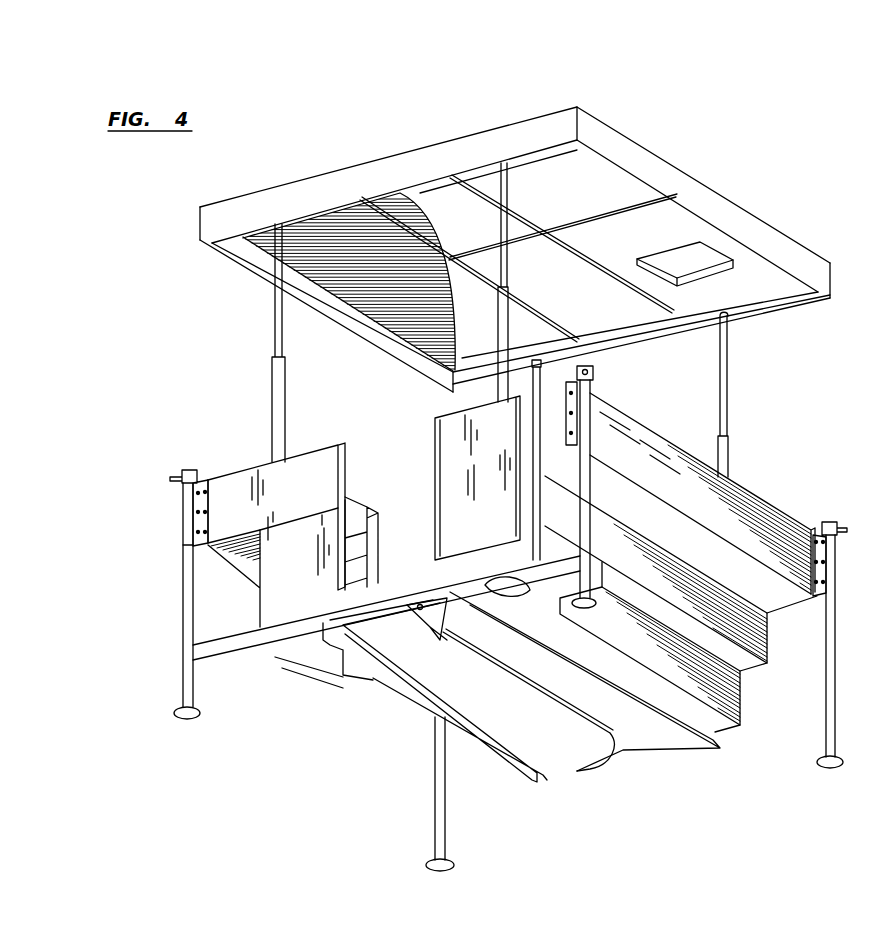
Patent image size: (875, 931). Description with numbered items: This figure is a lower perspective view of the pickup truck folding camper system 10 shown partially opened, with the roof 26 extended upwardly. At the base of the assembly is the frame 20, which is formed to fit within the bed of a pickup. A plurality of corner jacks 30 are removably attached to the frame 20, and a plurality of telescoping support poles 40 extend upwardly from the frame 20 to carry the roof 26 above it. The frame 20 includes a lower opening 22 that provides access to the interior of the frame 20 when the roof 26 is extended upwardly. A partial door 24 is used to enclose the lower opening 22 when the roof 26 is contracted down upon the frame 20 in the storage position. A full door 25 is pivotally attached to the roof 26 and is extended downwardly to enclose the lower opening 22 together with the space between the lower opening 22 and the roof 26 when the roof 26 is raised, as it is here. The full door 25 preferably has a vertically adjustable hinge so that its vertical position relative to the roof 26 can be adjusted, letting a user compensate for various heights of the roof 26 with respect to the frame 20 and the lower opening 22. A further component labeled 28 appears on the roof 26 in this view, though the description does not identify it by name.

The pickup truck folding camper system 10 is at (714, 62).
The frame 20 is at (748, 633).
The lower opening 22 is at (347, 480).
The partial door 24 is at (442, 433).
The full door 25 is at (403, 230).
The roof 26 is at (523, 123).
The hatch cover 28 is at (710, 258).
The corner jacks 30 is at (192, 688).
The telescoping support poles 40 is at (283, 387).